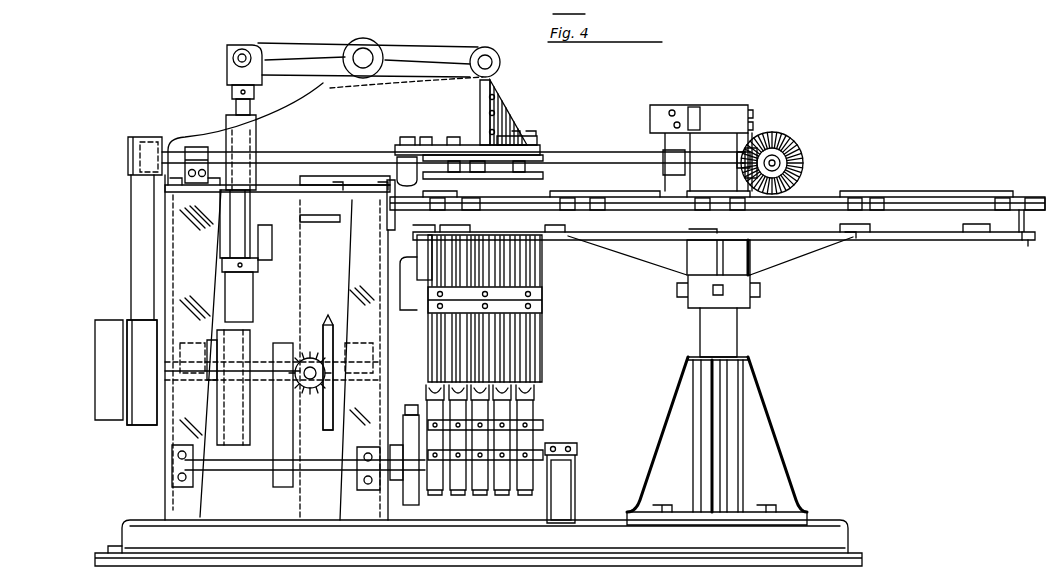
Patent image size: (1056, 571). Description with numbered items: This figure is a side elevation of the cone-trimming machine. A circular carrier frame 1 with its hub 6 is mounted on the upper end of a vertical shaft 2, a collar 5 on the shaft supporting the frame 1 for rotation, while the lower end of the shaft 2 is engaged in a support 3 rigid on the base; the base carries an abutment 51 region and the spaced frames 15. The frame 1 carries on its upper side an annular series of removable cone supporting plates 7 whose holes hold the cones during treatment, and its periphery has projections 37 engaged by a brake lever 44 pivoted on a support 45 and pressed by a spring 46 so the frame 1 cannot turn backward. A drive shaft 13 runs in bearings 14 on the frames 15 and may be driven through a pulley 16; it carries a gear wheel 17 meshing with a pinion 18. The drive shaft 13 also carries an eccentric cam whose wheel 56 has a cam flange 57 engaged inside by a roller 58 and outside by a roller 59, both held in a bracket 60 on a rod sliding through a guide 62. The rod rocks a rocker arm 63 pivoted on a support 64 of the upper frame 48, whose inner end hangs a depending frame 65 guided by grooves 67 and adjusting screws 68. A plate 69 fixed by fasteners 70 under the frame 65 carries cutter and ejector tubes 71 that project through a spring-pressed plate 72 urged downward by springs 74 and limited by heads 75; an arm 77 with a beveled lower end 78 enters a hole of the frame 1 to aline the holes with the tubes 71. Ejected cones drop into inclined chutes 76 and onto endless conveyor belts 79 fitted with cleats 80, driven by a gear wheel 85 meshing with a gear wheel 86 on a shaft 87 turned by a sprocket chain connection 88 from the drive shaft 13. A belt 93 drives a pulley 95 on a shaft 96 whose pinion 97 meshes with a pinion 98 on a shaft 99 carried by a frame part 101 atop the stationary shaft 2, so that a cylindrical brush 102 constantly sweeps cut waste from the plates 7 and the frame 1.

The frame 1 is at (931, 195).
The vertical shaft 2 is at (737, 333).
The support 3 is at (740, 440).
The collar 5 is at (752, 292).
The hub 6 is at (745, 262).
The cone supporting plates 7 is at (835, 195).
The drive shaft 13 is at (122, 378).
The bearings 14 is at (192, 362).
The frames 15 is at (185, 255).
The pulley 16 is at (103, 412).
The gear wheel 17 is at (326, 332).
The pinion 18 is at (312, 358).
The projections 37 is at (855, 238).
The brake lever 44 is at (318, 224).
The support 45 is at (360, 190).
The spring 46 is at (280, 255).
The frame 48 is at (301, 96).
The abutment 51 is at (897, 567).
The wheel 56 is at (217, 403).
The cam flange 57 is at (243, 442).
The roller 58 is at (228, 345).
The roller 59 is at (253, 283).
The bracket 60 is at (258, 265).
The guide 62 is at (228, 118).
The rocker arm 63 is at (283, 48).
The support 64 is at (366, 55).
The depending frame 65 is at (512, 130).
The grooves 67 is at (252, 244).
The screws 68 is at (502, 118).
The plate 69 is at (540, 152).
The fasteners 70 is at (522, 147).
The tubes 71 is at (530, 167).
The plate 72 is at (478, 179).
The springs 74 is at (514, 179).
The heads 75 is at (522, 140).
The chutes 76 is at (530, 268).
The arm 77 is at (395, 182).
The beveled lower end 78 is at (397, 184).
The conveyor belts 79 is at (465, 486).
The cleats 80 is at (525, 432).
The gear wheel 85 is at (418, 408).
The gear wheel 86 is at (408, 512).
The shaft 87 is at (343, 468).
The sprocket chain connection 88 is at (278, 430).
The belt 93 is at (140, 222).
The pulley 95 is at (128, 155).
The shaft 96 is at (300, 160).
The pinion 97 is at (757, 191).
The pinion 98 is at (786, 136).
The shaft 99 is at (802, 160).
The frame part 101 is at (738, 117).
The cylindrical brush 102 is at (796, 150).